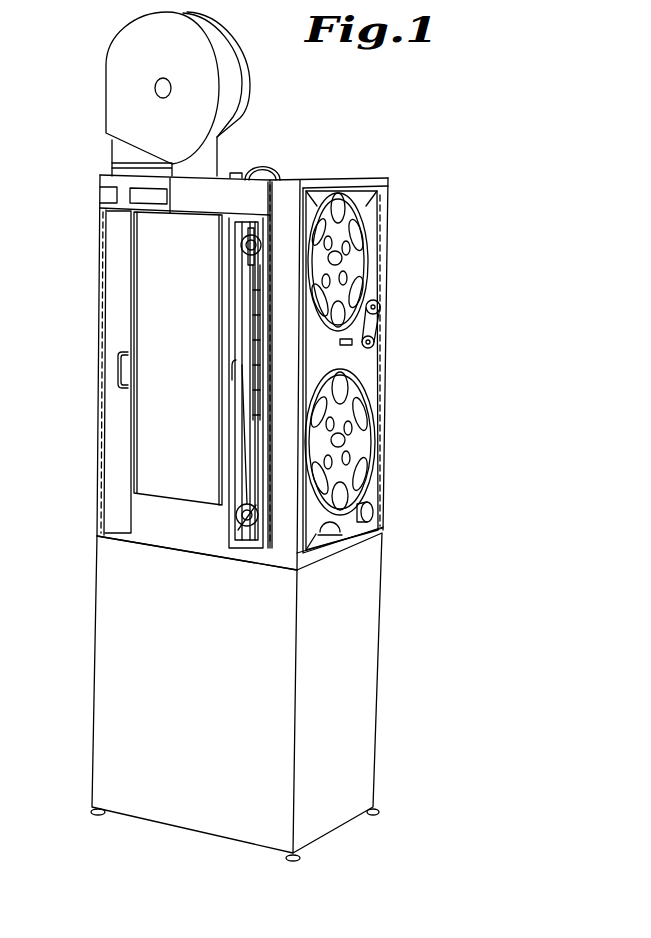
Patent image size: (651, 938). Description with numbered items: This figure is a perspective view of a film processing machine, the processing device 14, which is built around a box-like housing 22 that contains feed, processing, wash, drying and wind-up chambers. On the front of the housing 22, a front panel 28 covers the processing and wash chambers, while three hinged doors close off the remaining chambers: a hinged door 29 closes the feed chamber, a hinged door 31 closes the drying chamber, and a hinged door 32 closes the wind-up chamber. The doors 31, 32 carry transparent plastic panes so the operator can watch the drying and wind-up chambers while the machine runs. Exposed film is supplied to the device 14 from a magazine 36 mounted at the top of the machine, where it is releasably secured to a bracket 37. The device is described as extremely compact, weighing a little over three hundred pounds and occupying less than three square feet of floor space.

The processing device 14 is at (389, 447).
The box-like housing 22 is at (100, 348).
The front panel 28 is at (190, 404).
The hinged door 29 is at (130, 440).
The hinged door 31 is at (233, 447).
The hinged door 32 is at (362, 368).
The magazine 36 is at (209, 110).
The bracket 37 is at (110, 168).